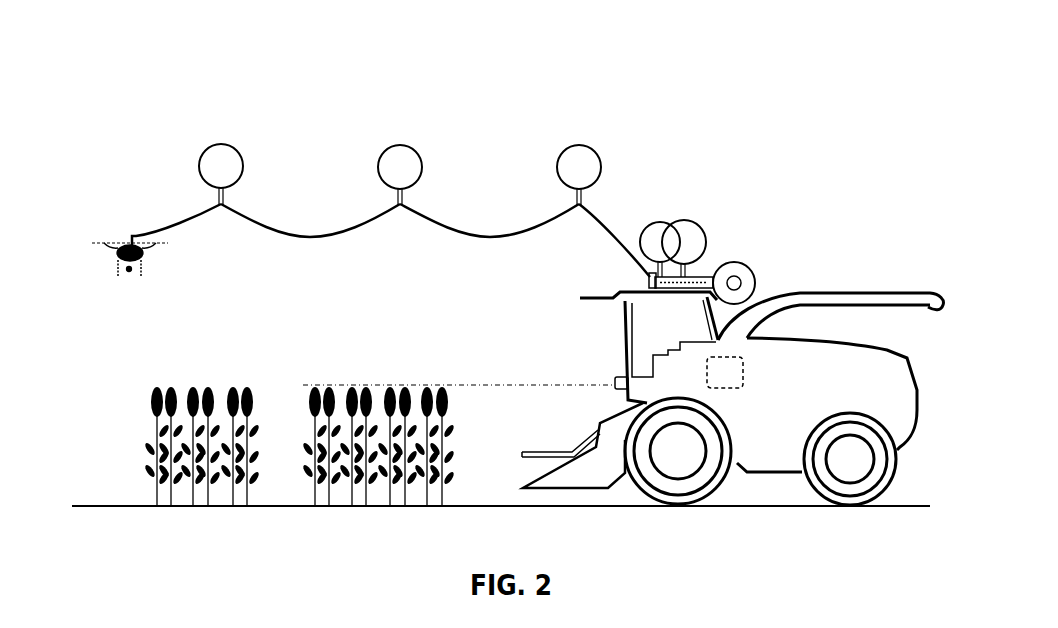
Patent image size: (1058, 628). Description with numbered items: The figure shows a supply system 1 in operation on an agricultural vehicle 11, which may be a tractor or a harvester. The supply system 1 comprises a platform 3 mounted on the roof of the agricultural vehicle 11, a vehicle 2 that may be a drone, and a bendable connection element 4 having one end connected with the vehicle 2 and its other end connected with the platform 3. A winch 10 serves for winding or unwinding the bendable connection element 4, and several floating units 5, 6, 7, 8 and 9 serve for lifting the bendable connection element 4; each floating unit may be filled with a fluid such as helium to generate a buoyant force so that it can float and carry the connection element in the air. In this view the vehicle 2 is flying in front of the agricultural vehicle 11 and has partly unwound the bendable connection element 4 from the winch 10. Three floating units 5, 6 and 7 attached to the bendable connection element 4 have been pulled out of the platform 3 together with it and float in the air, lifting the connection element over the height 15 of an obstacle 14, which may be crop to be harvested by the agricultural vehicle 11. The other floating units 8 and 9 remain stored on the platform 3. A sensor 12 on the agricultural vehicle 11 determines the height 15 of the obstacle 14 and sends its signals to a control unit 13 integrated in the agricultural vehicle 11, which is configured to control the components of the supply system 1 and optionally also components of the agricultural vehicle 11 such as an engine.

The supply system 1 is at (726, 284).
The vehicle 2 is at (118, 248).
The platform 3 is at (680, 229).
The bendable connection element 4 is at (301, 232).
The floating unit 5 is at (216, 160).
The floating unit 6 is at (385, 160).
The floating unit 7 is at (588, 165).
The floating unit 8 is at (660, 227).
The floating unit 9 is at (697, 245).
The winch 10 is at (752, 280).
The agricultural vehicle 11 is at (843, 362).
The sensor 12 is at (620, 387).
The control unit 13 is at (730, 375).
The obstacle 14 is at (138, 432).
The height 15 is at (467, 381).